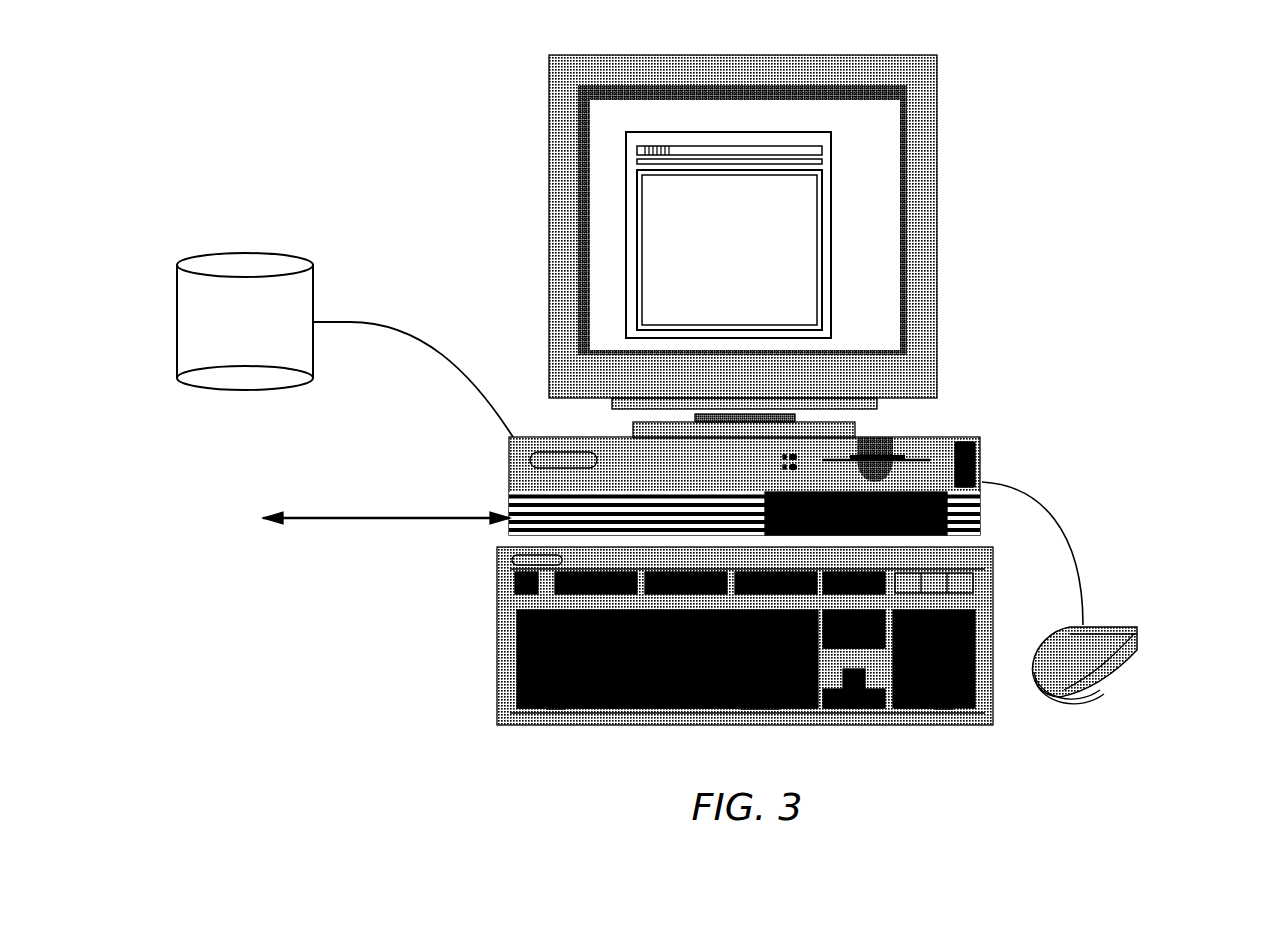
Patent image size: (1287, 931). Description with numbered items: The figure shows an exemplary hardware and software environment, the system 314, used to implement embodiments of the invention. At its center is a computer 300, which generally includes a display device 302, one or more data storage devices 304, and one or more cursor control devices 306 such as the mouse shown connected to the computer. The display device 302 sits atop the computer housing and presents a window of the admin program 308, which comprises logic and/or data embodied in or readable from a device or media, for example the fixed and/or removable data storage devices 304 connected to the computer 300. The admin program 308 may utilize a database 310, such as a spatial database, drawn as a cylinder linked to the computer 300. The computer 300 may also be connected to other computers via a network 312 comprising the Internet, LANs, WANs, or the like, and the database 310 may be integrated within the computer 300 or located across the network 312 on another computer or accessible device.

The computer 300 is at (868, 547).
The display device 302 is at (870, 236).
The data storage devices 304 is at (913, 458).
The cursor control devices 306 is at (1108, 687).
The admin program 308 is at (904, 235).
The database 310 is at (345, 352).
The network 312 is at (332, 520).
The system 314 is at (475, 98).